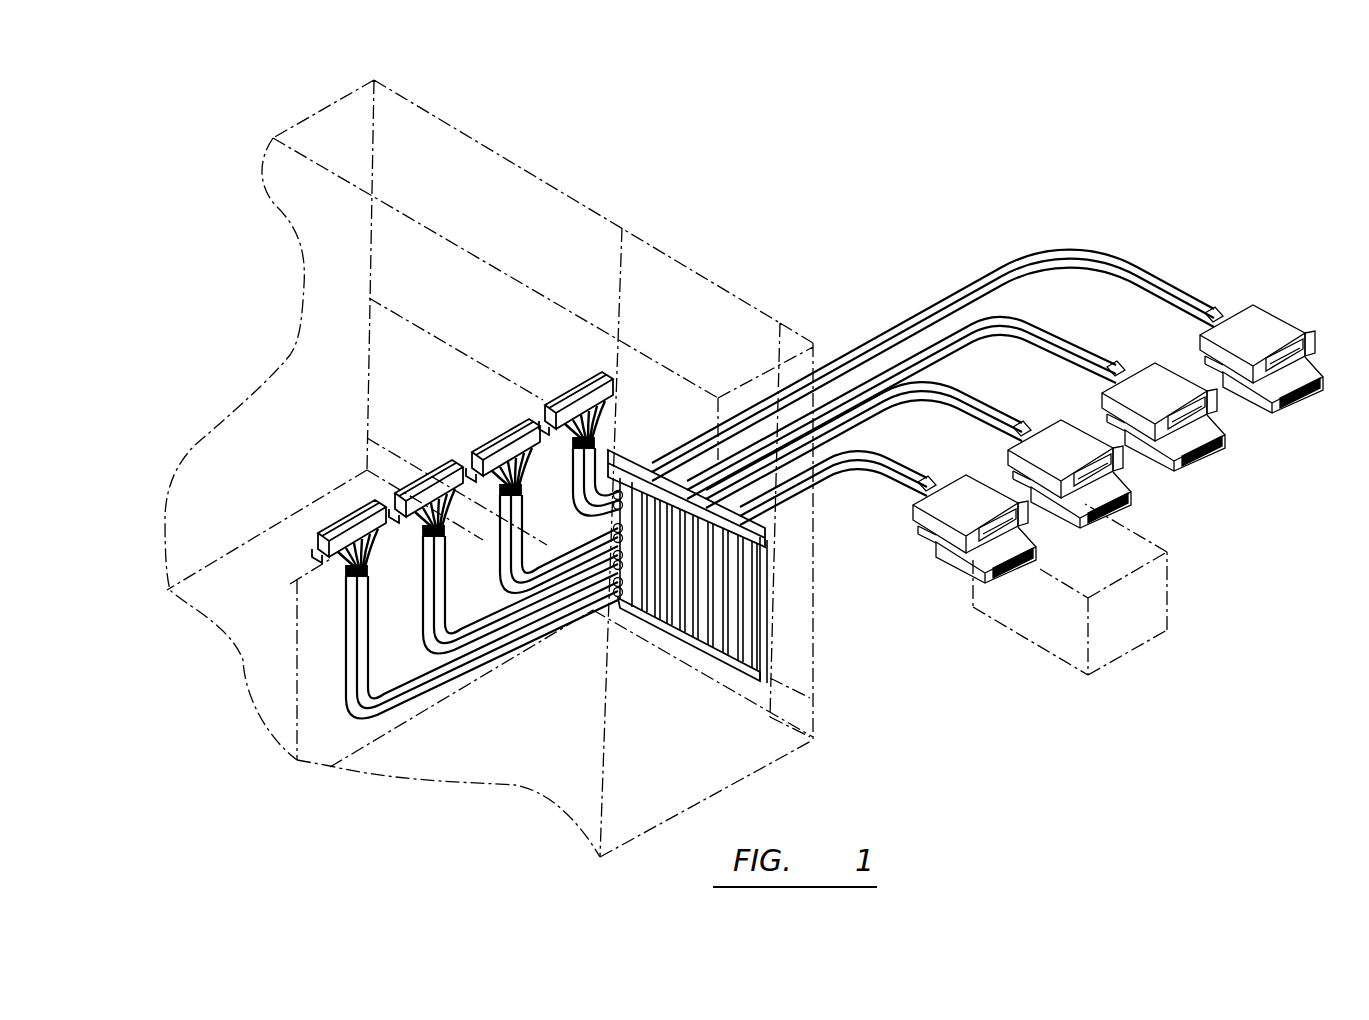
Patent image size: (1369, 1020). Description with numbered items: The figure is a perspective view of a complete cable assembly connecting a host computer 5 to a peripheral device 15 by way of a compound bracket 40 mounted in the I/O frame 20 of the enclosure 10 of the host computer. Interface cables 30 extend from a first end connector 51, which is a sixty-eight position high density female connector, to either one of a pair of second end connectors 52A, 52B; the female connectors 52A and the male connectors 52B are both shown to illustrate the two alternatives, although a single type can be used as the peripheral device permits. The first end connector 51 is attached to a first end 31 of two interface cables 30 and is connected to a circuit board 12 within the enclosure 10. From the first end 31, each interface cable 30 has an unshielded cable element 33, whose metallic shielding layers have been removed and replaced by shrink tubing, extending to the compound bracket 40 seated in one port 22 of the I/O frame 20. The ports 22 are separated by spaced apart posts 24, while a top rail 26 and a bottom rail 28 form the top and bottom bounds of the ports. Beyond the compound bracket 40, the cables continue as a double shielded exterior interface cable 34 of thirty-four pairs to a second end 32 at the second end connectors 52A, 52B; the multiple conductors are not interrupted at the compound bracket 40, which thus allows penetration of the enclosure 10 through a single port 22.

The host computer 5 is at (554, 153).
The enclosure 10 is at (657, 247).
The circuit board 12 is at (303, 576).
The external device 15 is at (1047, 652).
The I/O frame 20 is at (738, 536).
The port 22 is at (667, 625).
The post 24 is at (710, 642).
The top rail 26 is at (758, 530).
The bottom rail 28 is at (705, 655).
The interface cable 30 is at (771, 505).
The first end 31 is at (610, 447).
The second end 32 is at (1218, 312).
The unshielded cable element 33 is at (475, 673).
The exterior interface cable 34 is at (917, 317).
The compound bracket 40 is at (619, 607).
The first end connector 51 is at (576, 388).
The second end connector (female) 52A is at (1283, 312).
The second end connector (male) 52B is at (1310, 412).